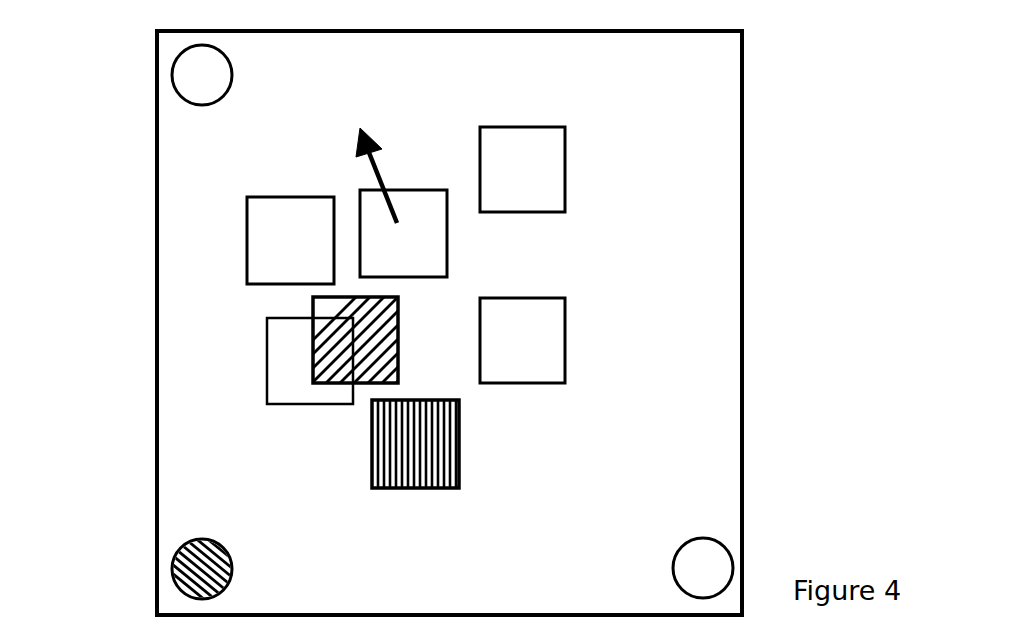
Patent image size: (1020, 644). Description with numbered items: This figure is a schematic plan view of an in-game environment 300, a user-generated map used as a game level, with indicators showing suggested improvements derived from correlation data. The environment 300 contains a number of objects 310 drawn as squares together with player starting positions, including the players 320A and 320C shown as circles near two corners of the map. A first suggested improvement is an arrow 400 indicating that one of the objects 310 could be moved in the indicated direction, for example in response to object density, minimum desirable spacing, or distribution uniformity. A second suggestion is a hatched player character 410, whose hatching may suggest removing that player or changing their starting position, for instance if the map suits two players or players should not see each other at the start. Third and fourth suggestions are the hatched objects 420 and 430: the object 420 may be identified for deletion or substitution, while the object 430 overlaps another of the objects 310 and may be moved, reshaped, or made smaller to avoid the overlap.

The in-game environment 300 is at (750, 160).
The objects 310 is at (468, 255).
The player 320A is at (195, 73).
The player 320C is at (695, 562).
The arrow 400 is at (375, 133).
The hatched player character 410 is at (203, 540).
The hatched object 420 is at (413, 488).
The hatched object 430 is at (312, 340).